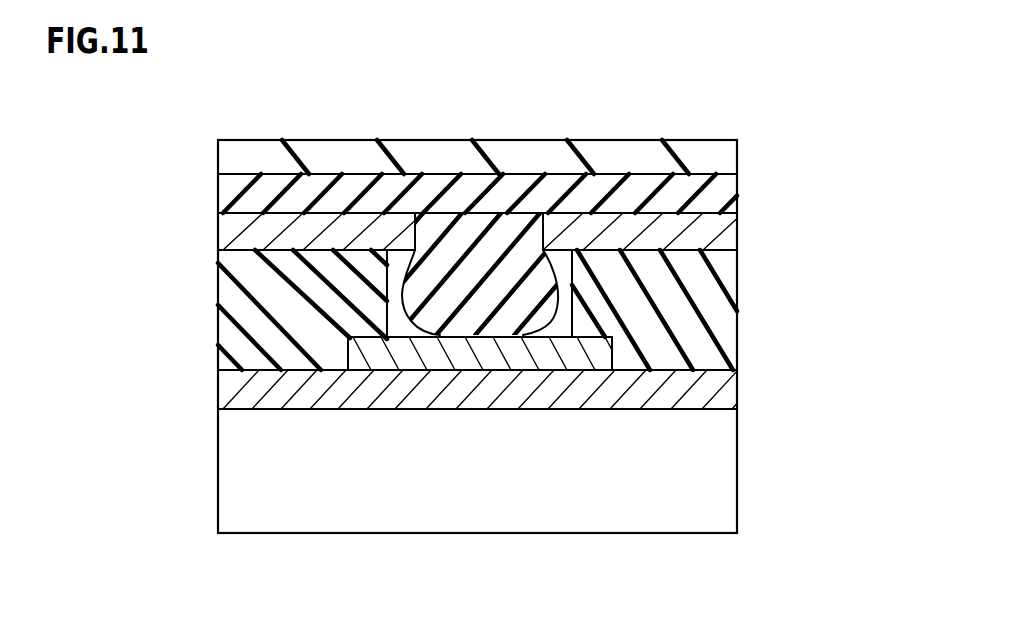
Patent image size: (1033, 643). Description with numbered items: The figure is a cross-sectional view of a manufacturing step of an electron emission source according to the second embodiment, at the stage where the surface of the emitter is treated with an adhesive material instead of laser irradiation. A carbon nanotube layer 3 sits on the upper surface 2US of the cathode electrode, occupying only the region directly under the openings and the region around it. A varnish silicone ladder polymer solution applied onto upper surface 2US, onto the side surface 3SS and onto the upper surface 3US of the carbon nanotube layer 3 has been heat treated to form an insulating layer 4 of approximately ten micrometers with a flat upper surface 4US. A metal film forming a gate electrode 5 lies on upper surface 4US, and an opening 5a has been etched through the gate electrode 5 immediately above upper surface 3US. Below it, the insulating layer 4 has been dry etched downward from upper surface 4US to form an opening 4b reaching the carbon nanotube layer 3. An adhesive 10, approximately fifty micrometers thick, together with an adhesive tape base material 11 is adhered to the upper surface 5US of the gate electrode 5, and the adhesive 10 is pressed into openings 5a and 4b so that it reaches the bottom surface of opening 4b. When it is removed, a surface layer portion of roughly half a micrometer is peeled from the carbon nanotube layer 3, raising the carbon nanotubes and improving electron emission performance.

The adhesive tape base material 11 is at (705, 150).
The adhesive 10 is at (705, 192).
The gate electrode 5 is at (333, 230).
The upper surface of gate electrode 5US is at (652, 212).
The opening 5a is at (543, 250).
The insulating layer 4 is at (253, 279).
The upper surface of insulating layer 4US is at (683, 243).
The opening 4b is at (412, 272).
The carbon nanotube layer 3 is at (547, 345).
The upper surface of carbon nanotube layer 3US is at (593, 336).
The side surface of carbon nanotube layer 3SS is at (613, 352).
The upper surface of cathode electrode 2US is at (262, 368).